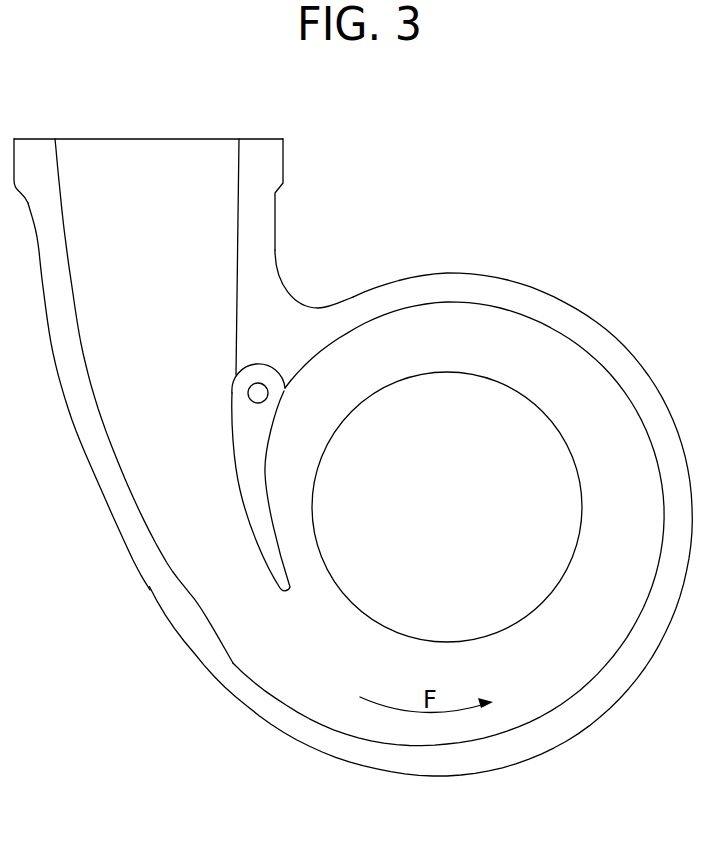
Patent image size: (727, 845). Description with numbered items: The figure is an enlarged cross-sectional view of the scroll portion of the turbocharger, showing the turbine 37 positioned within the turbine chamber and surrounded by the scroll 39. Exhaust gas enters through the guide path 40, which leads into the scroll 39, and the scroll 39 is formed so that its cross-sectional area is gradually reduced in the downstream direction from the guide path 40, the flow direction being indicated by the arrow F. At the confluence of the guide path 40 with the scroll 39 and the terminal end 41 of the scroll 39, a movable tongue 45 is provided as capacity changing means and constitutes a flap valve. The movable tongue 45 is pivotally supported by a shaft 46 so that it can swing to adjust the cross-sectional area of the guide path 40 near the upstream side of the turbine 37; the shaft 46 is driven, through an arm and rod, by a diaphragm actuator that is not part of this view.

The turbine 37 is at (464, 507).
The scroll 39 is at (607, 637).
The guide path 40 is at (213, 601).
The terminal end 41 is at (313, 552).
The movable tongue 45 is at (262, 477).
The shaft 46 is at (264, 395).